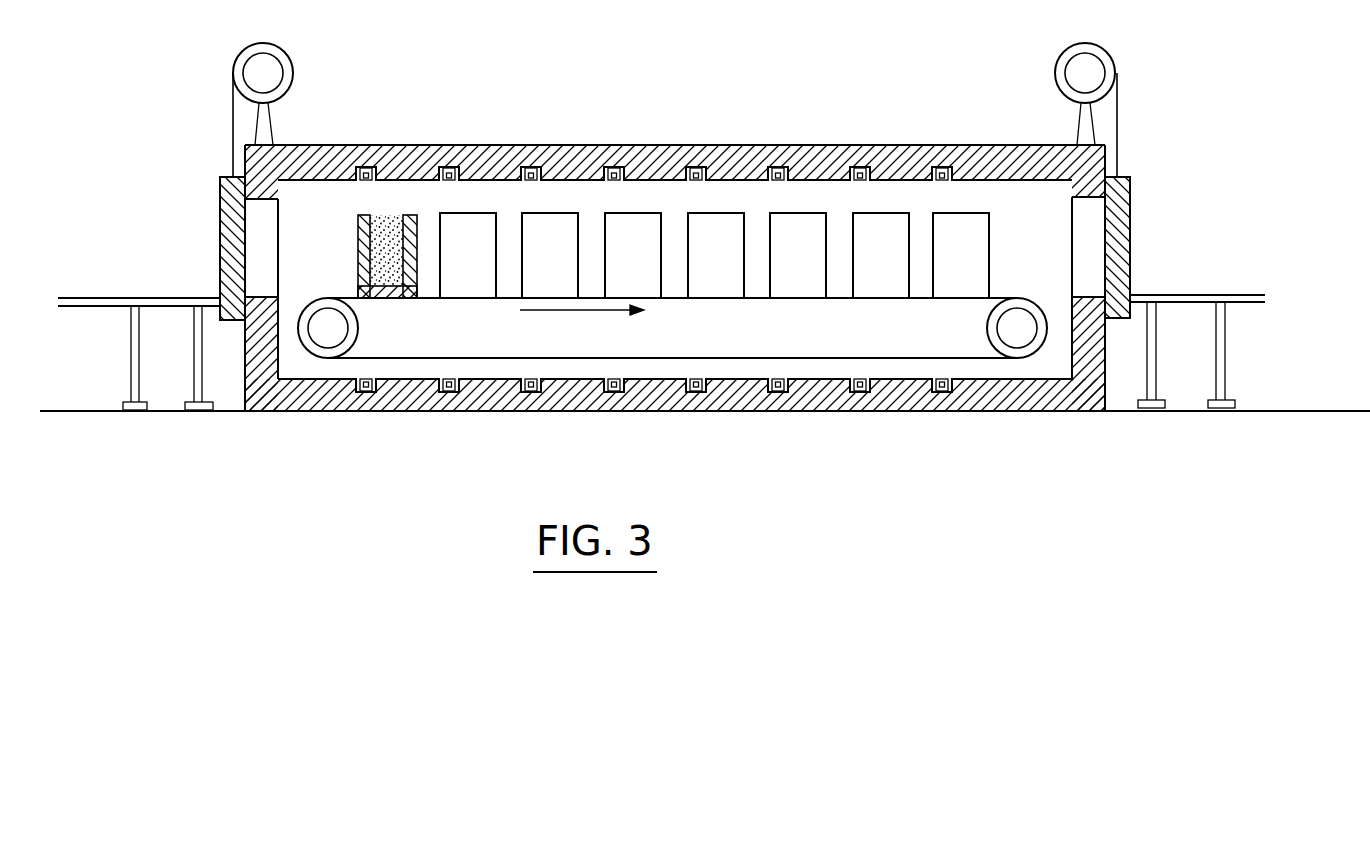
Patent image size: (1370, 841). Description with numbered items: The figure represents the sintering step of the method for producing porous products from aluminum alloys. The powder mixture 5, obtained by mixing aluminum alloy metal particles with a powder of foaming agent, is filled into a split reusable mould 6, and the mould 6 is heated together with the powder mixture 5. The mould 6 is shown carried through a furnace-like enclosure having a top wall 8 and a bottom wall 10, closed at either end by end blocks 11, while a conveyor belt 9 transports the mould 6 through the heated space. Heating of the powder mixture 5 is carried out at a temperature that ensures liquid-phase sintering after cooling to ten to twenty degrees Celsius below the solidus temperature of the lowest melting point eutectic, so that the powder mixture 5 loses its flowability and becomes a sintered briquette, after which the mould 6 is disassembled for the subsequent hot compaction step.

The powder mixture 5 is at (386, 215).
The split reusable mould 6 is at (418, 243).
The furnace top wall 8 is at (812, 145).
The conveyor belt 9 is at (837, 299).
The furnace bottom wall 10 is at (602, 381).
The end closure block 11 is at (220, 203).